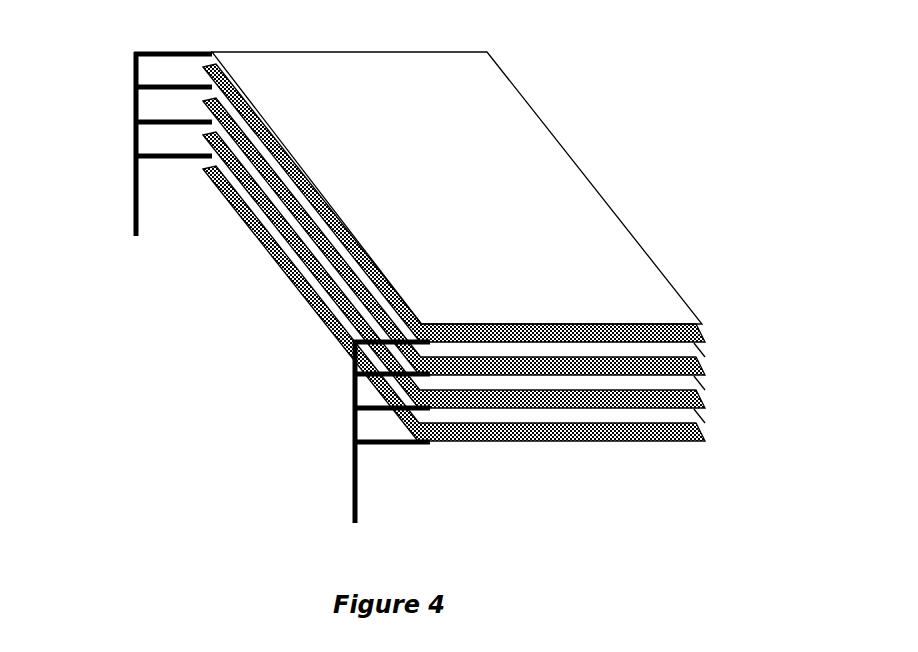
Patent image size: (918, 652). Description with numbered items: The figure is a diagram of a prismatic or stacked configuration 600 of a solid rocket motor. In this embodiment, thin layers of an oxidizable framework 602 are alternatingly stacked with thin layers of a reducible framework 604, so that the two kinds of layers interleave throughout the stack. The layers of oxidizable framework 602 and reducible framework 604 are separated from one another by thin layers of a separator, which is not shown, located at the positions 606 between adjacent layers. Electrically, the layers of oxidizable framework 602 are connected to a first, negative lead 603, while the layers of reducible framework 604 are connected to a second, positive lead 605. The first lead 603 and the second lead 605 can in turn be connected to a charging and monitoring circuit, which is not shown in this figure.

The prismatic or stacked configuration 600 is at (466, 297).
The oxidizable framework 602 is at (487, 127).
The first (negative) lead 603 is at (133, 202).
The reducible framework 604 is at (547, 442).
The second (positive) lead 605 is at (352, 485).
The positions of separator layers 606 is at (724, 362).